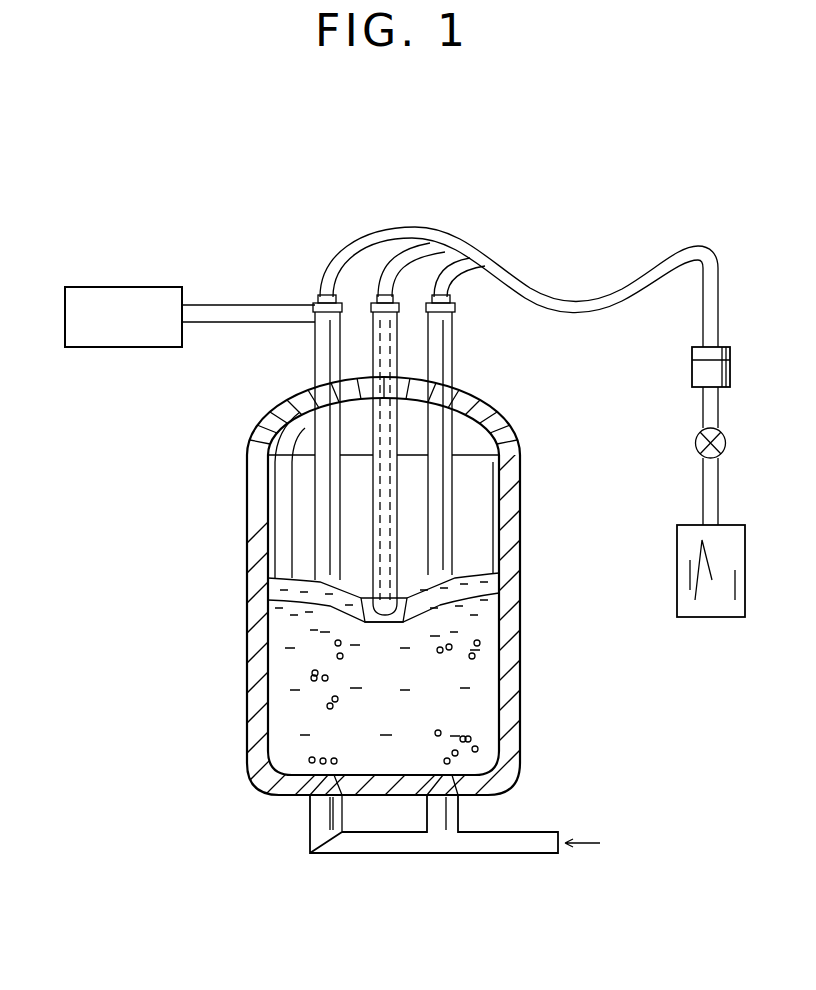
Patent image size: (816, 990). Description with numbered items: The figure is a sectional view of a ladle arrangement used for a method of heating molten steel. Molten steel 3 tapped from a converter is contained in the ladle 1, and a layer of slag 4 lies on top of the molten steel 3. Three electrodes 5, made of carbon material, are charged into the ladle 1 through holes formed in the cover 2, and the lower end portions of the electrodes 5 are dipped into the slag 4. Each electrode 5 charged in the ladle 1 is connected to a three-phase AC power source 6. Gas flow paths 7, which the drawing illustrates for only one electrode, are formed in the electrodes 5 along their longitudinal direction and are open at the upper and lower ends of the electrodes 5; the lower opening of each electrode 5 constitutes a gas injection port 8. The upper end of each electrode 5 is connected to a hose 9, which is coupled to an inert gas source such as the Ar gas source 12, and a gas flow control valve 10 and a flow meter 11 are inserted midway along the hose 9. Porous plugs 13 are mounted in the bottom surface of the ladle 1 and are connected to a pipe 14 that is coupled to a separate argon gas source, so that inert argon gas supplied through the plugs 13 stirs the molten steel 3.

The ladle 1 is at (520, 540).
The cover 2 is at (505, 427).
The molten steel 3 is at (500, 672).
The slag 4 is at (503, 585).
The electrodes 5 is at (318, 358).
The three-phase AC power source 6 is at (120, 348).
The gas flow paths 7 is at (388, 366).
The gas injection port 8 is at (385, 624).
The hose 9 is at (596, 313).
The gas flow control valve 10 is at (695, 445).
The flow meter 11 is at (692, 368).
The Ar gas source 12 is at (677, 578).
The porous plugs 13 is at (442, 755).
The pipe 14 is at (418, 855).